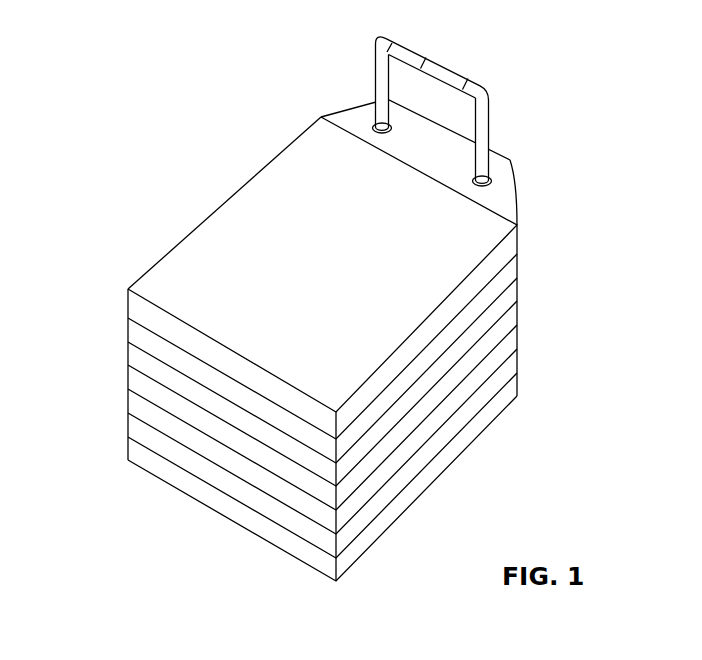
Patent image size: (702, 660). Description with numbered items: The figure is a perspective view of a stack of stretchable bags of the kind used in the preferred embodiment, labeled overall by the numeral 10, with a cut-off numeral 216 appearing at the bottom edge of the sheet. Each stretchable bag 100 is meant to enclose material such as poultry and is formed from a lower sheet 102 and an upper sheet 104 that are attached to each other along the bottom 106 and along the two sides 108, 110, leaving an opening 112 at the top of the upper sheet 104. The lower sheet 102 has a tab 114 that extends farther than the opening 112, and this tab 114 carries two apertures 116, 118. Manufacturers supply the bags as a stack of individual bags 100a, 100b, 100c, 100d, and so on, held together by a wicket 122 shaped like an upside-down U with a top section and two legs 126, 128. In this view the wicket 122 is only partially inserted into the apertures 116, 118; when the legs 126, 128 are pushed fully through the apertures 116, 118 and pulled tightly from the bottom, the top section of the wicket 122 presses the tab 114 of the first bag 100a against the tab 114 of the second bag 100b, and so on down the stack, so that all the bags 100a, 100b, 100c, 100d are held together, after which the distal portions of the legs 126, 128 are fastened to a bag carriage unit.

The portable container assembly 10 is at (328, 339).
The stretchable bag 100 is at (328, 387).
The first bag 100a is at (350, 415).
The second bag 100b is at (345, 450).
The bag 100c is at (348, 470).
The fourth stacked layer 100d is at (347, 490).
The lower sheet 102 is at (494, 263).
The upper sheet 104 is at (280, 278).
The bottom 106 is at (193, 325).
The side 108 is at (196, 227).
The side 110 is at (453, 290).
The opening 112 is at (356, 118).
The tab 114 is at (508, 212).
The aperture 116 is at (391, 117).
The aperture 118 is at (493, 172).
The wicket 122 is at (434, 100).
The leg 126 is at (491, 109).
The leg 128 is at (381, 60).
The element 216 is at (455, 654).